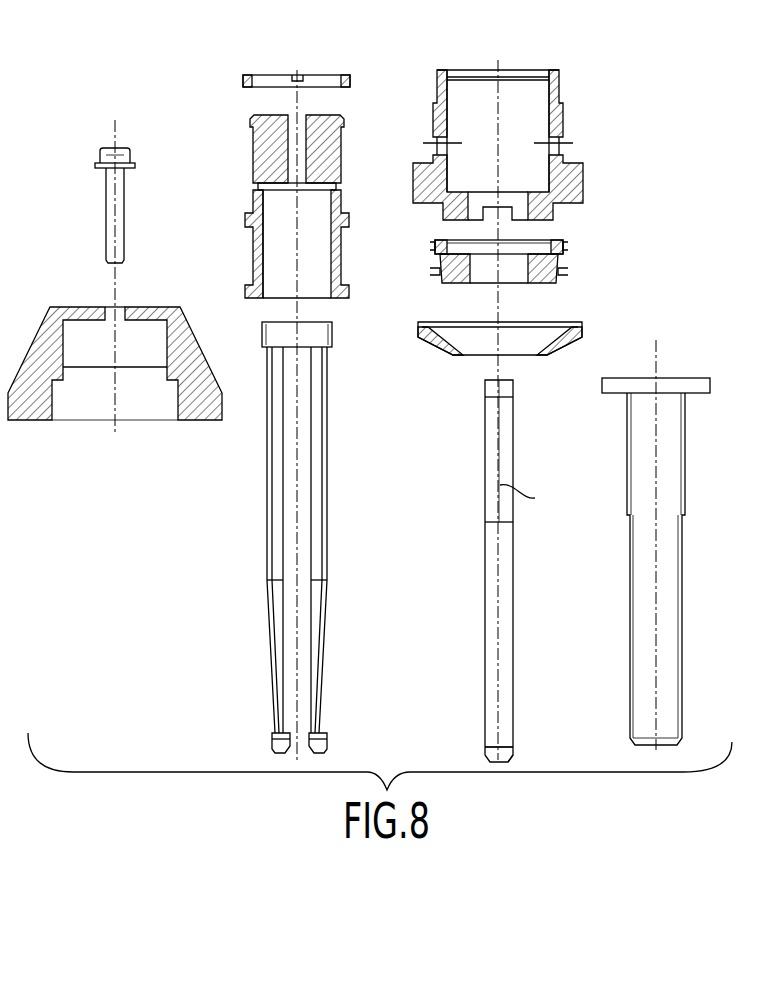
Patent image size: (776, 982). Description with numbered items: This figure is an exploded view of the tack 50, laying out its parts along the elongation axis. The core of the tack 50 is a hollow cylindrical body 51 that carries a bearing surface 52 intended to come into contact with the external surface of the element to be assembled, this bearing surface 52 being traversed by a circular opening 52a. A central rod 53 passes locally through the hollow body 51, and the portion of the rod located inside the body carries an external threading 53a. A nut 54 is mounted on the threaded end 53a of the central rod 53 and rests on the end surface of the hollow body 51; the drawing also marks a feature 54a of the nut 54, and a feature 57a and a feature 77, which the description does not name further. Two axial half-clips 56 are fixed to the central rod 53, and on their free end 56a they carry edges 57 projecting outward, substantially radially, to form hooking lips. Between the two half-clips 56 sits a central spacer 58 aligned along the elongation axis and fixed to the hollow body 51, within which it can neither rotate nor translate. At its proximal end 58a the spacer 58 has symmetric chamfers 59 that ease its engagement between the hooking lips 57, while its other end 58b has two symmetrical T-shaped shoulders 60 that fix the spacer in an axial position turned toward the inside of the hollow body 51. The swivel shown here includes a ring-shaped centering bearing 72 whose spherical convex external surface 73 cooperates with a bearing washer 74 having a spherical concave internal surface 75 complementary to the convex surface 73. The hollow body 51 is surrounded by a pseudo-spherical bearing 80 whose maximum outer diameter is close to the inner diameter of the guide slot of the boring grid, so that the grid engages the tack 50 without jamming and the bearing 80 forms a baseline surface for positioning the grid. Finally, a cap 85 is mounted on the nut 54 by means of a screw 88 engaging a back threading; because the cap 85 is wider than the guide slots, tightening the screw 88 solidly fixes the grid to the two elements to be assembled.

The tack 50 is at (658, 225).
The hollow cylindrical body 51 is at (527, 151).
The bearing surface 52 is at (567, 357).
The circular opening 52a is at (520, 224).
The central rod 53 is at (301, 550).
The external threading 53a is at (333, 333).
The nut 54 is at (245, 218).
The sleeve inner wall 54a is at (265, 248).
The axial half-clips 56 is at (272, 543).
The free end of half-clip 56a is at (320, 722).
The edges forming hooking lips 57 is at (273, 748).
The jaw shoulder 57a is at (272, 732).
The central spacer 58 is at (508, 625).
The proximal end of spacer 58a is at (492, 752).
The other end of spacer 58b is at (630, 428).
The symmetric chamfers 59 is at (517, 755).
The T-shaped shoulders 60 is at (648, 540).
The ring-shaped centering bearing 72 is at (504, 278).
The spherical convex external surface 73 is at (437, 272).
The bearing washer 74 is at (522, 359).
The spherical concave internal surface 75 is at (458, 341).
The seal holder bottom 77 is at (518, 284).
The pseudo-spherical bearing 80 is at (588, 178).
The cap 85 is at (200, 343).
The screw 88 is at (118, 206).